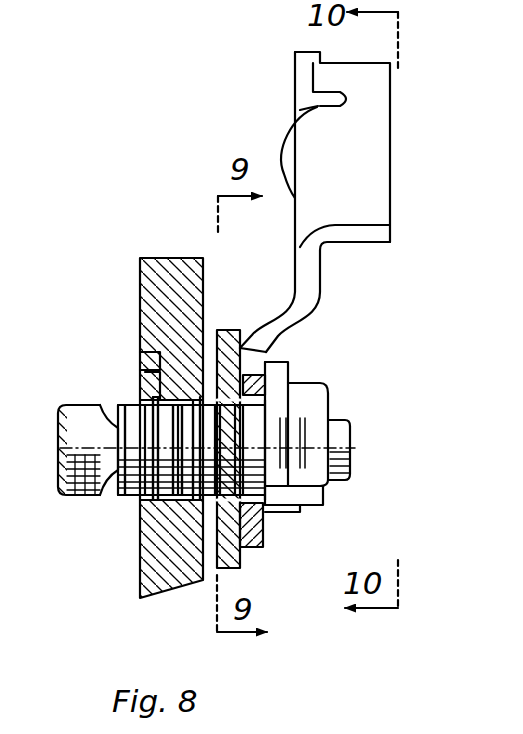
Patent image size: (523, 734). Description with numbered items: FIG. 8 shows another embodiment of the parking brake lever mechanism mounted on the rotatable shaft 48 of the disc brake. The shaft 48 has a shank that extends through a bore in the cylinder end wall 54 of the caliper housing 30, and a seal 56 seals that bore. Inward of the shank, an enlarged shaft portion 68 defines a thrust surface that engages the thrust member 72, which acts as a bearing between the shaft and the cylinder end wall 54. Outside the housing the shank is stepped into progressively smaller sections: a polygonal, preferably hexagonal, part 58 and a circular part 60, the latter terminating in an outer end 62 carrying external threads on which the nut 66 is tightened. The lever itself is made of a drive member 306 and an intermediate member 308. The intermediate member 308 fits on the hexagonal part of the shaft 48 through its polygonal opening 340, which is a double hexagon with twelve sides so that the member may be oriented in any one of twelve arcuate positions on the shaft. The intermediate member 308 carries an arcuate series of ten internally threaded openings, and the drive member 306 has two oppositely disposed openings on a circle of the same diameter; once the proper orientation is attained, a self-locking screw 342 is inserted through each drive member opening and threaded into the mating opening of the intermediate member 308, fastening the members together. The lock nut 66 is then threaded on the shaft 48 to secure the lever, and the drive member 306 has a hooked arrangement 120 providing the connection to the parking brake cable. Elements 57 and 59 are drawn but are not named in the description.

The caliper housing 30 is at (155, 256).
The rotatable shaft 48 is at (91, 408).
The cylinder end wall 54 is at (137, 352).
The seal 56 is at (205, 498).
The washer 57 is at (200, 510).
The hexagonal cross section part 58 is at (342, 447).
The spacer 59 is at (195, 516).
The circular part 60 is at (330, 390).
The outer end 62 is at (340, 425).
The nut 66 is at (305, 510).
The enlarged shaft portion 68 is at (135, 400).
The thrust member 72 is at (150, 395).
The hooked arrangement 120 is at (368, 78).
The drive member 306 is at (323, 277).
The intermediate member 308 is at (231, 328).
The polygonal opening 340 is at (268, 350).
The self-locking screw 342 is at (291, 374).